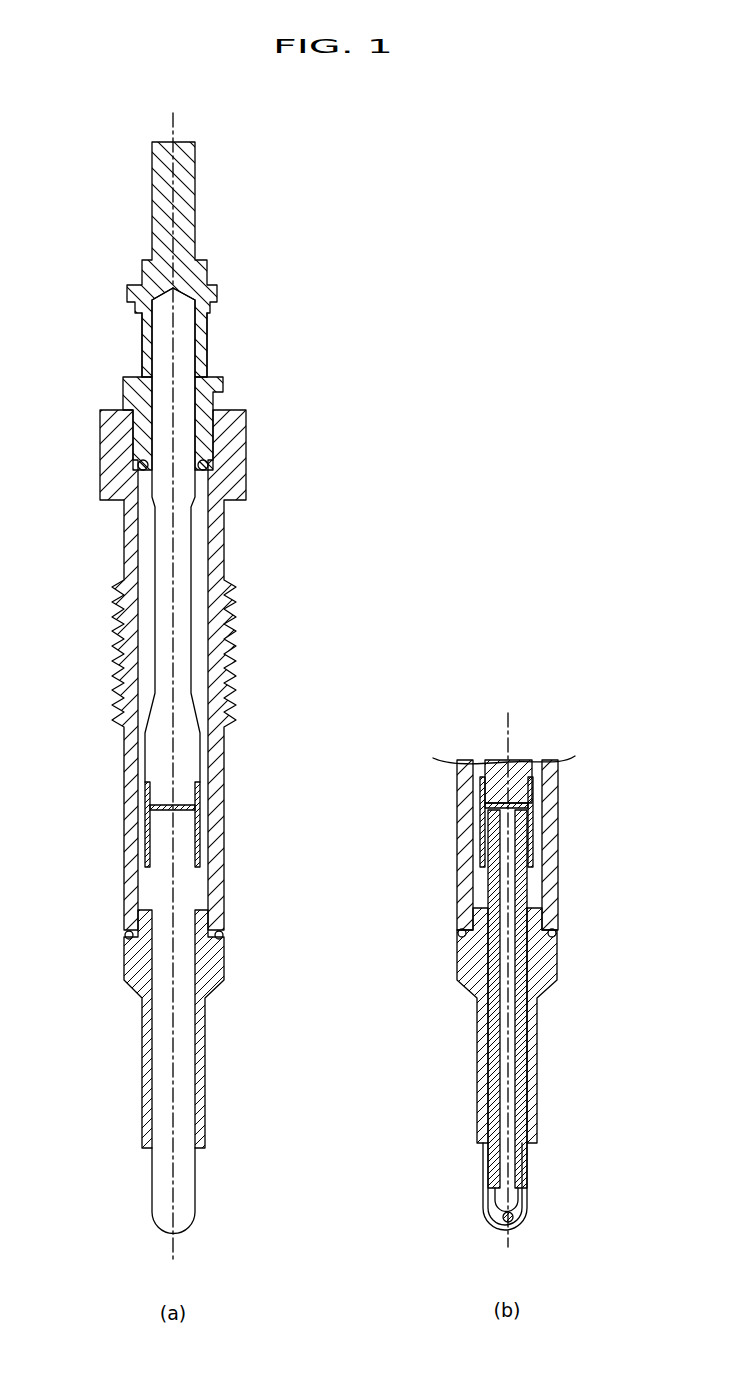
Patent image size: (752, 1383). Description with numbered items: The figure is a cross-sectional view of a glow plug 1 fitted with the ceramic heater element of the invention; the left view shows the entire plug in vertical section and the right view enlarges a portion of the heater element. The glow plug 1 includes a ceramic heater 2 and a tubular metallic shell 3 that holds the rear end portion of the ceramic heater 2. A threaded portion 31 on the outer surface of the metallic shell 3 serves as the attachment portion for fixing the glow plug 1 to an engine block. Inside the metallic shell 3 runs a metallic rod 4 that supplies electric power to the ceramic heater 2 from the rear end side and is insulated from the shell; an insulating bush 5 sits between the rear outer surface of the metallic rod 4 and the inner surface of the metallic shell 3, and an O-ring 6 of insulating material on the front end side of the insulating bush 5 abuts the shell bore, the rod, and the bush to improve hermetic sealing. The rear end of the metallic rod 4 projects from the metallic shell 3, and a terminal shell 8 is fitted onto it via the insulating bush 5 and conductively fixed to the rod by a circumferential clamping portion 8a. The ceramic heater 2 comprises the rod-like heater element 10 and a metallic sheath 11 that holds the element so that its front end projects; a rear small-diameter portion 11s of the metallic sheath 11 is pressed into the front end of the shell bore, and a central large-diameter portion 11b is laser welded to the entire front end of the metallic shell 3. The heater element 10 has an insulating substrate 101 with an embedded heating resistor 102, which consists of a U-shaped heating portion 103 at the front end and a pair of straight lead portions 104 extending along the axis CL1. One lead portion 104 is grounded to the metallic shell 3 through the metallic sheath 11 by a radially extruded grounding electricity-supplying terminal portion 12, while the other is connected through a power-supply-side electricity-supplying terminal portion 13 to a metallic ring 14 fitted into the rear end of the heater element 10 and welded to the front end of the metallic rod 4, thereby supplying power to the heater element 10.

The glow plug 1 is at (298, 168).
The ceramic heater 2 is at (208, 1038).
The metallic shell 3 is at (228, 557).
The threaded portion 31 is at (237, 645).
The metallic rod 4 is at (150, 557).
The insulating bush 5 is at (223, 400).
The O-ring 6 is at (138, 463).
The terminal shell 8 is at (197, 197).
The circumferential clamping portion 8a is at (208, 350).
The heater element 10 is at (200, 1170).
The metallic sheath 11 is at (207, 1097).
The large-diameter portion 11b is at (131, 963).
The small-diameter portion 11s is at (146, 924).
The grounding electricity-supplying terminal portion 12 is at (488, 950).
The power-supply-side electricity-supplying terminal portion 13 is at (533, 830).
The metallic ring 14 is at (200, 818).
The insulating substrate 101 is at (528, 1178).
The heating resistor 102 is at (520, 1152).
The heating portion 103 is at (520, 1228).
The lead portions 104 is at (513, 1043).
The axis CL1 is at (173, 120).